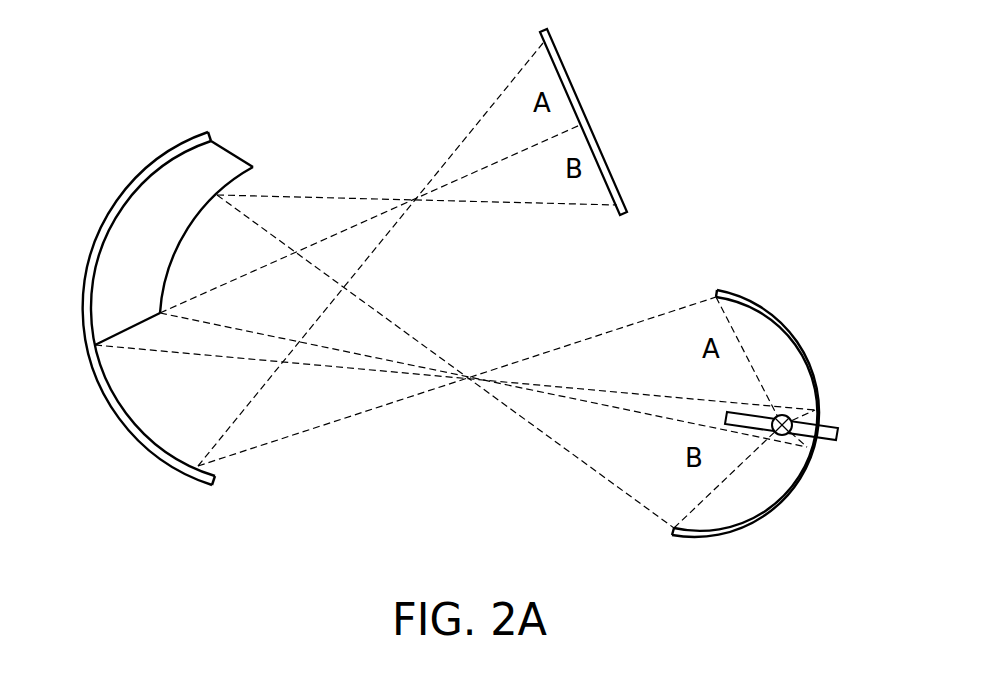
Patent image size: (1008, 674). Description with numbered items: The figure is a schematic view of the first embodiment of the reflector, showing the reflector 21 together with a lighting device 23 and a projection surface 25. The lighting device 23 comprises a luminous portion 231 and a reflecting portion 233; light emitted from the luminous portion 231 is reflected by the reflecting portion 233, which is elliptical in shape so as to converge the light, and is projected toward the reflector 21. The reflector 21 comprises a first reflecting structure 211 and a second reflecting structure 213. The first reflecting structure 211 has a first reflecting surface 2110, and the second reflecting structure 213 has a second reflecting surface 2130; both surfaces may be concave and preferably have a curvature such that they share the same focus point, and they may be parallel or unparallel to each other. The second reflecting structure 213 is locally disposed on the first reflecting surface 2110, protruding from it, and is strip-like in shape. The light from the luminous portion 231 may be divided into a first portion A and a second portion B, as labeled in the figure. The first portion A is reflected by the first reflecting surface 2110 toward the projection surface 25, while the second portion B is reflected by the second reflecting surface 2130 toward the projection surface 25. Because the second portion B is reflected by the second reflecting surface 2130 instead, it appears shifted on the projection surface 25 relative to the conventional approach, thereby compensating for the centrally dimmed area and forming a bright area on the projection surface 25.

The reflector 21 is at (197, 295).
The first reflecting structure 211 is at (95, 232).
The first reflecting surface 2110 is at (133, 423).
The second reflecting structure 213 is at (221, 203).
The second reflecting surface 2130 is at (237, 182).
The projection surface 25 is at (594, 71).
The lighting device 23 is at (783, 371).
The reflecting portion 233 is at (757, 300).
The luminous portion 231 is at (807, 438).